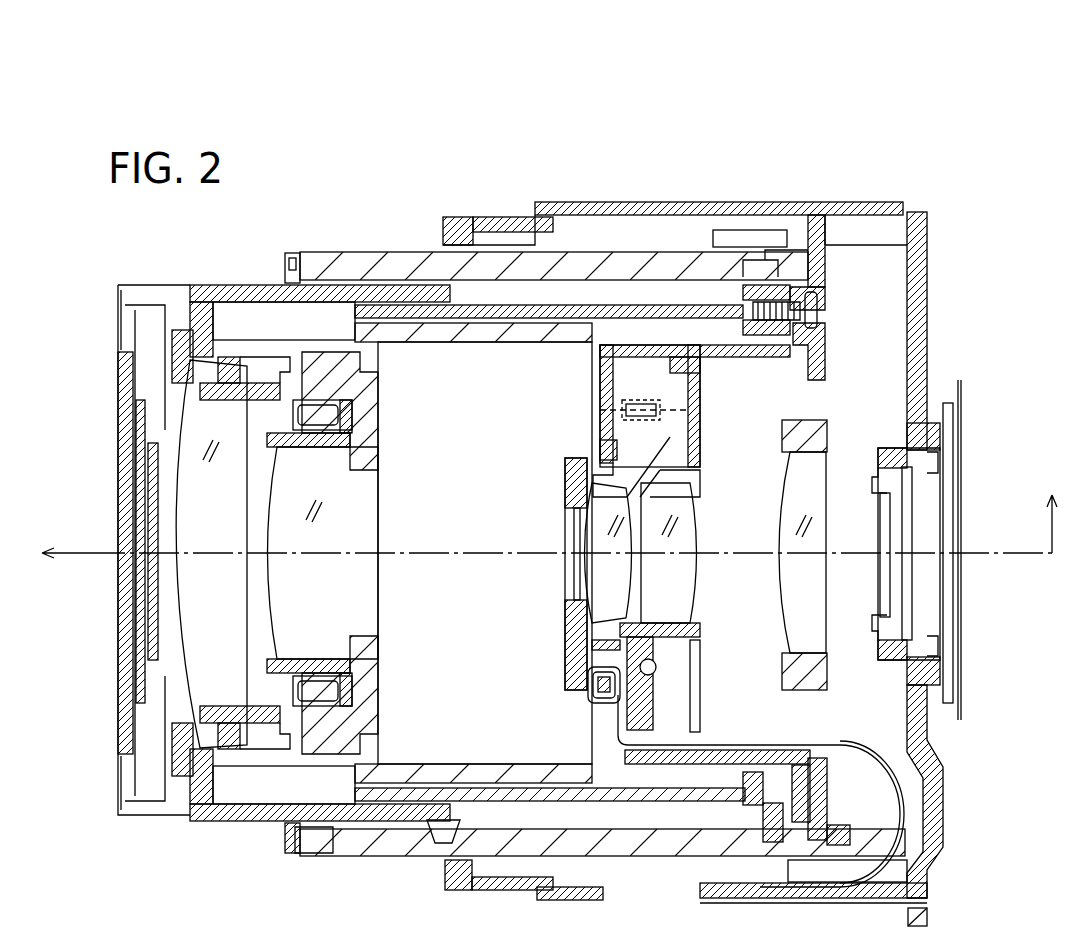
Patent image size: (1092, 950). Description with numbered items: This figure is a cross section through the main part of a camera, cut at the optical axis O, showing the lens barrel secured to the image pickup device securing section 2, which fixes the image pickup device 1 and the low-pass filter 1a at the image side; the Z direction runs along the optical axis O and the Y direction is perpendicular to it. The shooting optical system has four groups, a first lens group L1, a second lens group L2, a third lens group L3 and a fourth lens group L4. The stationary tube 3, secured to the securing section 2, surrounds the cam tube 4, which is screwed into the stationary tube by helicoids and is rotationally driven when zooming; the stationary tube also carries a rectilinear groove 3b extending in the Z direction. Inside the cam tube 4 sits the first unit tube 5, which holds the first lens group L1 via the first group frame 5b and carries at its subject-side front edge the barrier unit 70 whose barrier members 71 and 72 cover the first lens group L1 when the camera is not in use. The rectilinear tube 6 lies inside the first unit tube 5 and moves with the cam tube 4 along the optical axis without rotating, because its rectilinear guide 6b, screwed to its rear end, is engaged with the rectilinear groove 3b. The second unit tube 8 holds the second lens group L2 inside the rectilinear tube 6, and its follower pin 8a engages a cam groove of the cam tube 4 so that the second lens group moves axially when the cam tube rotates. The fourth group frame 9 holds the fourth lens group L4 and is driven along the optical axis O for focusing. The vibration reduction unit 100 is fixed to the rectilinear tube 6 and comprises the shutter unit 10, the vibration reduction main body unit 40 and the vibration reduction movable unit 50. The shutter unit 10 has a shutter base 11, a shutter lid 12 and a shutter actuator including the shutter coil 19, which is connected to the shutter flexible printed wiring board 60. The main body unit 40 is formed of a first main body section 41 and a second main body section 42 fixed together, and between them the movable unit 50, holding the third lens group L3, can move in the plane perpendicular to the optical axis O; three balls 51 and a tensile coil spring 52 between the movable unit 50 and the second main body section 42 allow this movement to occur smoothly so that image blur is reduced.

The image pickup device 1 is at (938, 599).
The low-pass filter 1a is at (895, 511).
The image pickup device securing section 2 is at (926, 330).
The stationary tube 3 is at (480, 880).
The rectilinear groove 3b is at (885, 232).
The cam tube 4 is at (367, 856).
The first unit tube 5 is at (216, 822).
The first group frame 5b is at (175, 742).
The rectilinear tube 6 is at (612, 802).
The rectilinear guide 6b is at (828, 265).
The second unit tube 8 is at (300, 754).
The follower pin 8a is at (385, 656).
The fourth group frame 9 is at (820, 665).
The shutter unit 10 is at (618, 158).
The shutter base 11 is at (577, 505).
The shutter lid 12 is at (566, 458).
The shutter coil 19 is at (600, 706).
The vibration reduction main body unit 40 is at (723, 158).
The first main body section 41 is at (689, 345).
The second main body section 42 is at (640, 345).
The vibration reduction movable unit 50 is at (673, 440).
The balls 51 is at (660, 660).
The tensile coil spring 52 is at (640, 400).
The shutter flexible printed wiring board 60 is at (910, 812).
The barrier unit 70 is at (128, 700).
The barrier member 71 is at (143, 512).
The barrier member 72 is at (150, 600).
The vibration reduction unit 100 is at (778, 108).
The first lens group L1 is at (140, 479).
The second lens group L2 is at (275, 623).
The third lens group L3 is at (582, 527).
The fourth lens group L4 is at (815, 470).
The optical axis O is at (424, 546).
The Z direction Z is at (52, 551).
The Y direction Y is at (1063, 519).